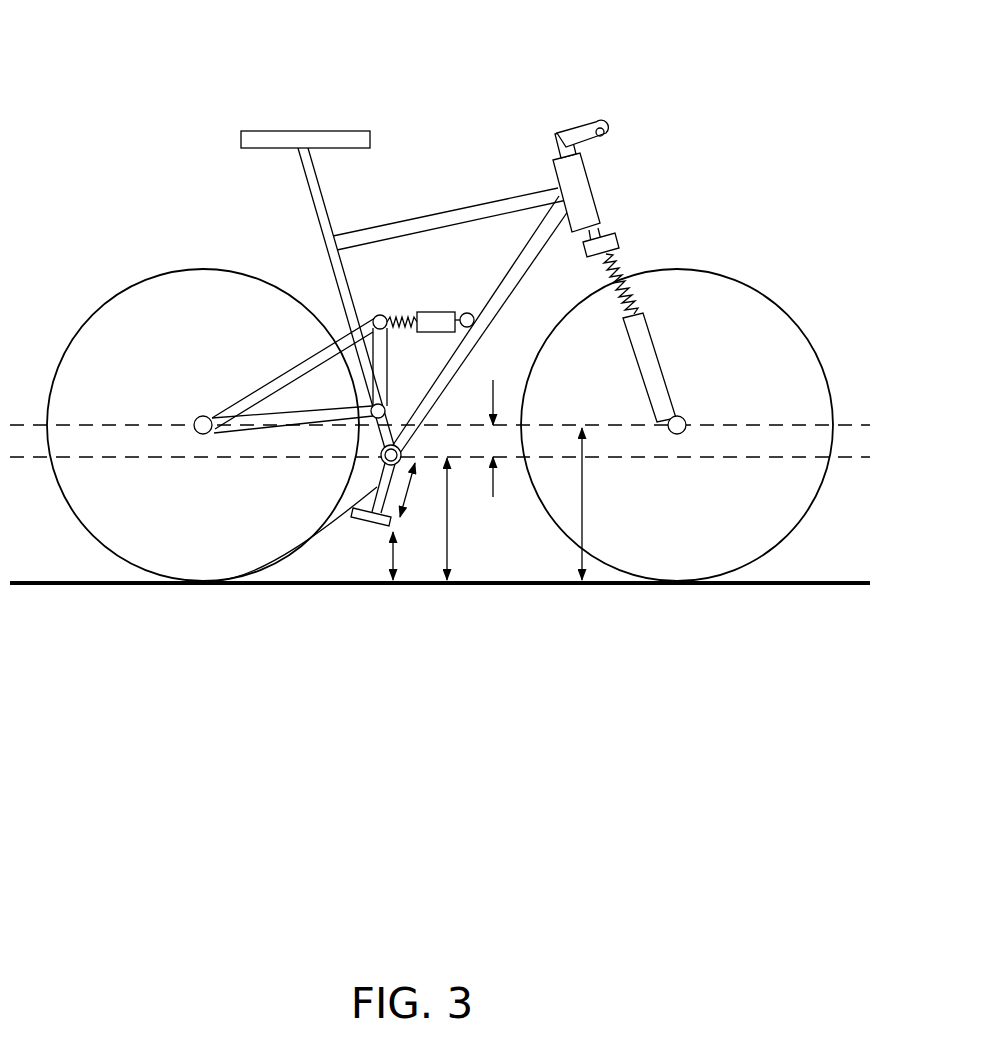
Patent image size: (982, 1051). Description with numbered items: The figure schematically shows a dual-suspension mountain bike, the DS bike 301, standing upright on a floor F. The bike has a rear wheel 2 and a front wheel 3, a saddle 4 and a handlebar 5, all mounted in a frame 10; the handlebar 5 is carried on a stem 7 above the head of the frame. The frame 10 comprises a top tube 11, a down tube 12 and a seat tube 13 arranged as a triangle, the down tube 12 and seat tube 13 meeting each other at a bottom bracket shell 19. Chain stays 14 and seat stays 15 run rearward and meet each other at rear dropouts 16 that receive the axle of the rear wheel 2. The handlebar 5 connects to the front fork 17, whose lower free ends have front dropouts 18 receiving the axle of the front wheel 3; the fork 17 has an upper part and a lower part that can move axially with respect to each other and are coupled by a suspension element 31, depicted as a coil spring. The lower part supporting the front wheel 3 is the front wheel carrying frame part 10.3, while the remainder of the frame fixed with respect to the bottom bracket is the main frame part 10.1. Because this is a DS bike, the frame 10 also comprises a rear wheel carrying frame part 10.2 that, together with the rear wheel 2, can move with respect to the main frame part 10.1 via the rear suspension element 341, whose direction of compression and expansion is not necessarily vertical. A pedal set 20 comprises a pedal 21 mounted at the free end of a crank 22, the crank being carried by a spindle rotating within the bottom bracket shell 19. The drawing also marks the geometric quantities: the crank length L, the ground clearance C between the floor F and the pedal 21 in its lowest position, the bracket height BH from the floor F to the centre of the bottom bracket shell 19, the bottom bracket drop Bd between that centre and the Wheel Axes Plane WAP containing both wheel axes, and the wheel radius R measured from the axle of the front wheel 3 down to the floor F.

The DS bike 301 is at (180, 72).
The rear wheel 2 is at (128, 285).
The front wheel 3 is at (735, 277).
The saddle 4 is at (332, 130).
The handlebar 5 is at (603, 128).
The stem 7 is at (563, 145).
The frame 10 is at (453, 142).
The main frame part 10.1 is at (513, 183).
The rear wheel carrying frame part 10.2 is at (270, 375).
The front wheel carrying frame part 10.3 is at (663, 368).
The top tube 11 is at (452, 200).
The down tube 12 is at (507, 282).
The seat tube 13 is at (343, 278).
The chain stays 14 is at (270, 427).
The seat stays 15 is at (297, 363).
The rear dropouts 16 is at (195, 420).
The front fork 17 is at (638, 313).
The front dropouts 18 is at (685, 420).
The bottom bracket shell 19 is at (393, 446).
The pedal set 20 is at (302, 618).
The pedal 21 is at (372, 514).
The crank 22 is at (317, 537).
The suspension element 31 is at (623, 267).
The rear suspension element 341 is at (422, 310).
The floor F is at (765, 592).
The Wheel Axes Plane WAP is at (97, 427).
The crank length L is at (413, 490).
The ground clearance C is at (402, 556).
The bracket height BH is at (462, 519).
The bottom bracket drop Bd is at (478, 444).
The wheel radius R is at (591, 504).